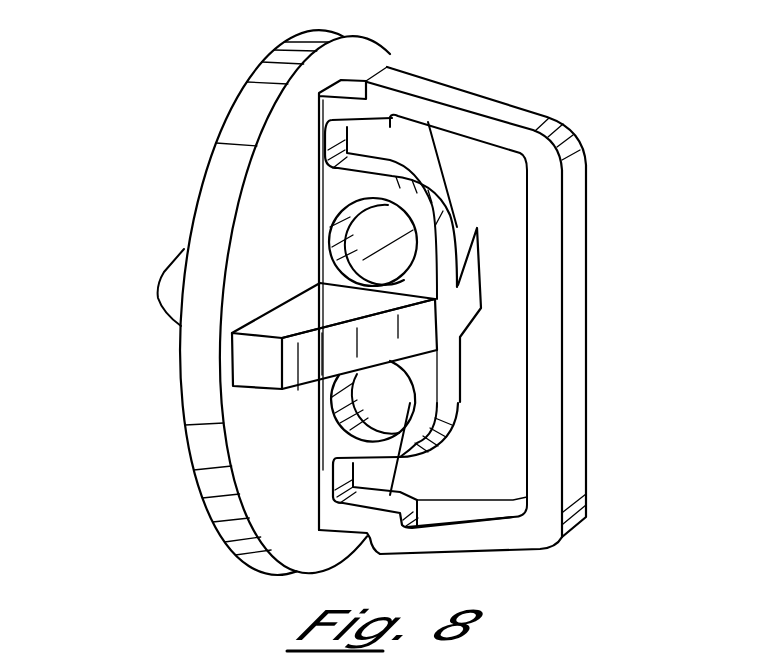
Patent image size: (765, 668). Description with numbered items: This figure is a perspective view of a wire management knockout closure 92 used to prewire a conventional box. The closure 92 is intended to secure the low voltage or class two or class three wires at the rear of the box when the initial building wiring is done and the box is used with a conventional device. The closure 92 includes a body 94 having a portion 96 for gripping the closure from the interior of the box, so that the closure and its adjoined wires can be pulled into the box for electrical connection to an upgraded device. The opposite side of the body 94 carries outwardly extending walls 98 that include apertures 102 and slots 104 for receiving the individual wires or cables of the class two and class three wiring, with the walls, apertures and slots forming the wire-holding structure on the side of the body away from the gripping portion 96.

The wire management knockout closure 92 is at (190, 137).
The body 94 is at (210, 216).
The portion for gripping 96 is at (168, 288).
The bracket 98 is at (308, 363).
The hook boss 102 is at (376, 205).
The back plate 104 is at (493, 167).